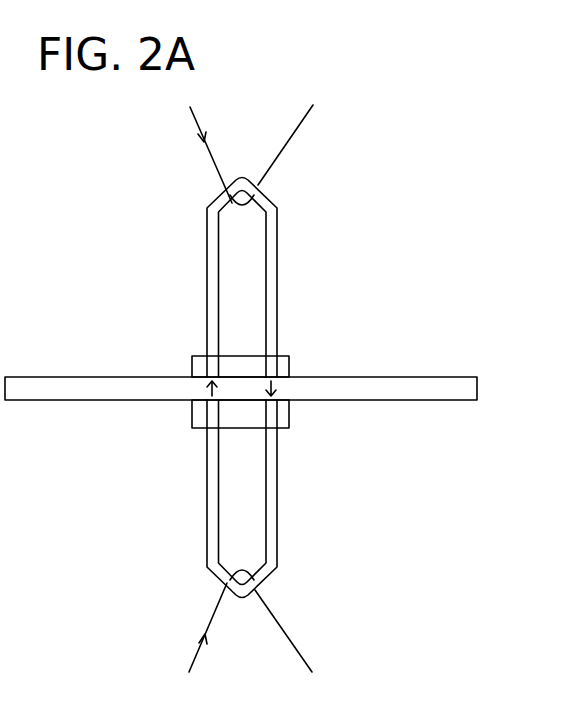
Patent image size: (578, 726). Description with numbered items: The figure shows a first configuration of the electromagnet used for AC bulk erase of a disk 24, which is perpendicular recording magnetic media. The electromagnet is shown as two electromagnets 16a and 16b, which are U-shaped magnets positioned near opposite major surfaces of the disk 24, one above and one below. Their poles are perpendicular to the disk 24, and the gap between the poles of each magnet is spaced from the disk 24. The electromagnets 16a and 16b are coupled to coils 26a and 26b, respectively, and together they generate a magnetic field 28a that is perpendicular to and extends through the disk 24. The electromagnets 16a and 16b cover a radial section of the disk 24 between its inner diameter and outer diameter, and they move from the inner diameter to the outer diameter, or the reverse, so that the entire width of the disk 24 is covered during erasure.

The electromagnet 16a is at (206, 282).
The electromagnet 16b is at (206, 510).
The disk 24 is at (477, 388).
The coil 26a is at (194, 118).
The coil 26b is at (192, 657).
The magnetic field 28a is at (277, 394).